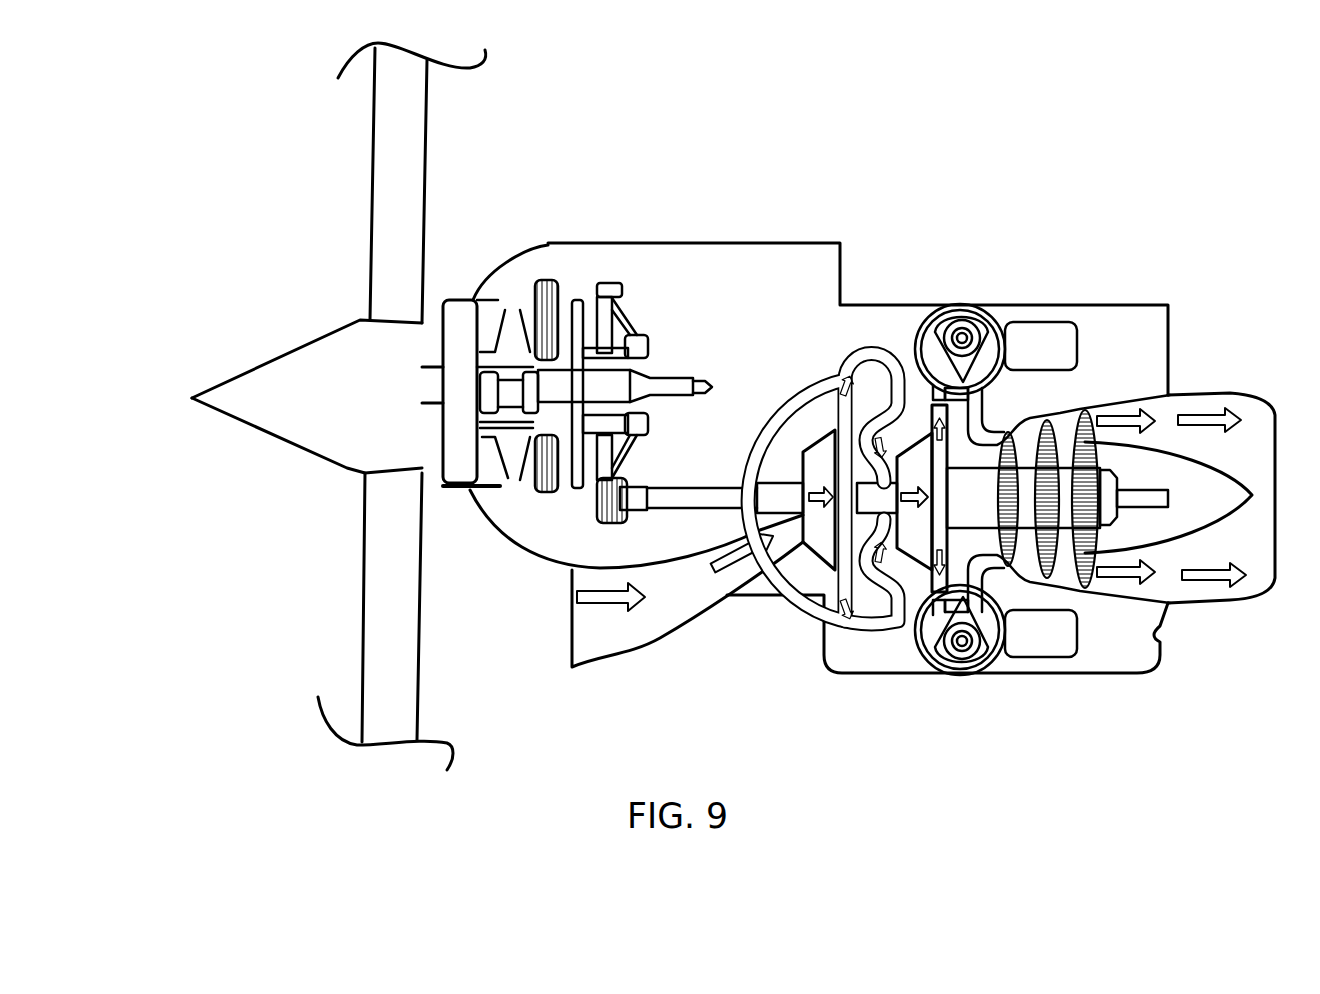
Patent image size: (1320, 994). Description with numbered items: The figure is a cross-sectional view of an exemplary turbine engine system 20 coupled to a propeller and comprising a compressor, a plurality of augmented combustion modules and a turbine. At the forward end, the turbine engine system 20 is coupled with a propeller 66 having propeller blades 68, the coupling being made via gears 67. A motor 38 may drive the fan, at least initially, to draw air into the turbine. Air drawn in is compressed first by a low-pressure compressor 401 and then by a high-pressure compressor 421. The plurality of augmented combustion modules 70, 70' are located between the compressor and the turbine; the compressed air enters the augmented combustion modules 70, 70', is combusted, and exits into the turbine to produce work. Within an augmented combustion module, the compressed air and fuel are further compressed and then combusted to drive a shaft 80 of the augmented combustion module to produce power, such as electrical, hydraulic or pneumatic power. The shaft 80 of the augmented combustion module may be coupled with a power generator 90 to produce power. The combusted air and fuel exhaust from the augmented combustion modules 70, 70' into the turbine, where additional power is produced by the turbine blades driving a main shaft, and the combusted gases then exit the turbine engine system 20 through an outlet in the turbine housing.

The turbine engine system 20 is at (787, 212).
The motor 38 is at (465, 345).
The propeller 66 is at (388, 275).
The gears 67 is at (548, 288).
The propeller blades 68 is at (388, 535).
The augmented combustion module 70 is at (960, 308).
The augmented combustion module 70' is at (951, 667).
The shaft 80 is at (967, 674).
The power generator 90 is at (1035, 640).
The low-pressure compressor 401 is at (835, 452).
The high-pressure compressor 421 is at (920, 472).